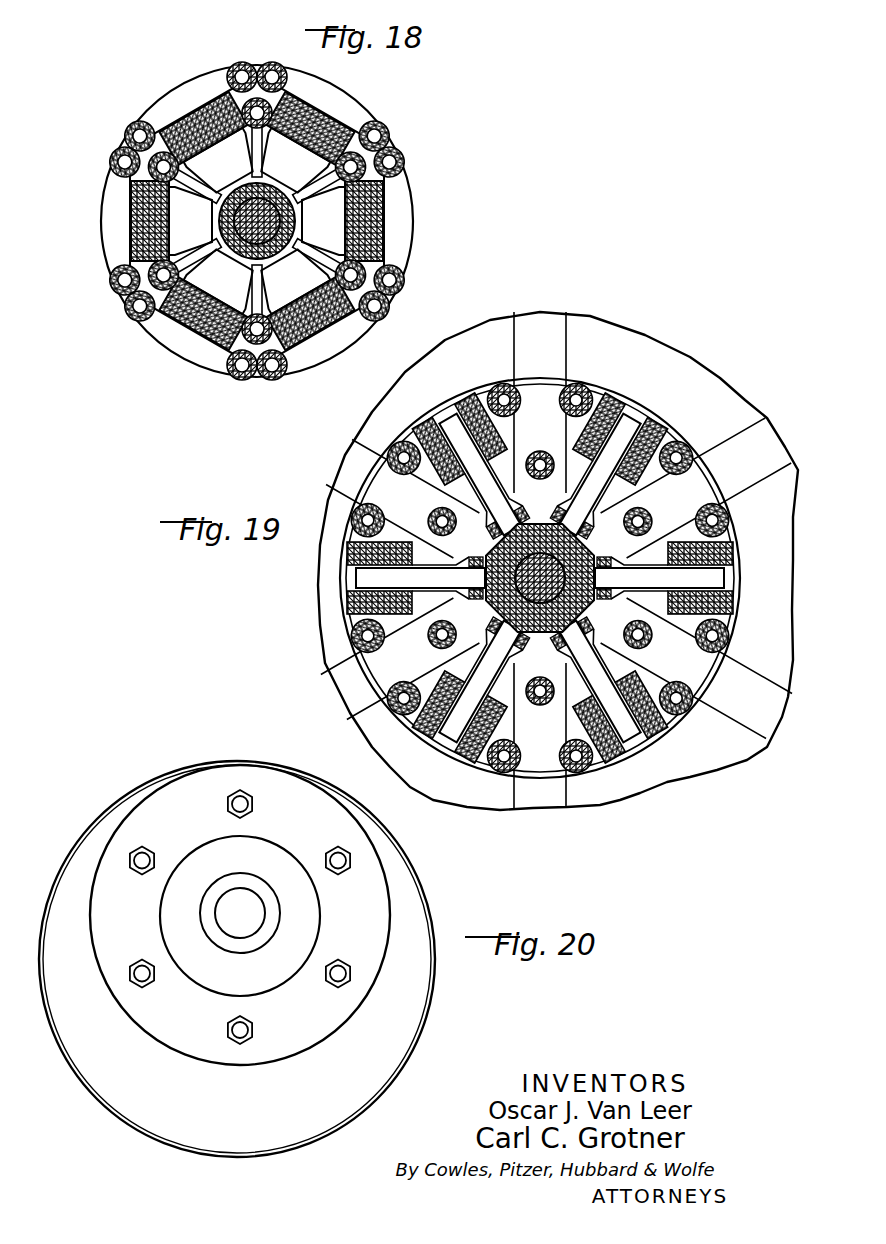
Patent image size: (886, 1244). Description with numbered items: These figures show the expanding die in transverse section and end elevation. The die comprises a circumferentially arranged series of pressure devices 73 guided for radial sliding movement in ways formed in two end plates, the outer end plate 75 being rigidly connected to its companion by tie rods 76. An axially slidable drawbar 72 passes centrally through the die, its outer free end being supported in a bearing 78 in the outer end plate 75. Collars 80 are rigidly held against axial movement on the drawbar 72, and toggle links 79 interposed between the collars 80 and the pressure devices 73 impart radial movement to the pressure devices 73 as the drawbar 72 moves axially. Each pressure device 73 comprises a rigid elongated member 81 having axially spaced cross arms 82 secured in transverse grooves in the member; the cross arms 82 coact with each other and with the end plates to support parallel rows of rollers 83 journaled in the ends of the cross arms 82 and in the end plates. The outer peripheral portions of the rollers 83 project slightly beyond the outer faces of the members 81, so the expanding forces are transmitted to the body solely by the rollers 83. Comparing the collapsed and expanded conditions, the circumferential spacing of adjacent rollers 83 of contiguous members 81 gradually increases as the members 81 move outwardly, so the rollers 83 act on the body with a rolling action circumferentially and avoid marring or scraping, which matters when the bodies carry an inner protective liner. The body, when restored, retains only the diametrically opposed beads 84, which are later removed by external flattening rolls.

In FIG. 18, the drawbar 72 is at (284, 224).
In FIG. 19, the drawbar 72 is at (592, 600).
In FIG. 20, the drawbar 72 is at (250, 902).
In FIG. 18, the pressure devices 73 is at (359, 102).
In FIG. 19, the pressure devices 73 is at (548, 378).
In FIG. 20, the outer end plate 75 is at (178, 1050).
In FIG. 18, the tie rods 76 is at (264, 129).
In FIG. 19, the tie rods 76 is at (542, 452).
In FIG. 20, the tie rods 76 is at (254, 804).
In FIG. 20, the bearing 78 is at (319, 930).
In FIG. 19, the toggle links 79 is at (456, 408).
In FIG. 19, the collars 80 is at (545, 521).
In FIG. 18, the rigid elongated members 81 is at (374, 202).
In FIG. 19, the rigid elongated members 81 is at (438, 424).
In FIG. 18, the cross arms 82 is at (192, 90).
In FIG. 19, the cross arms 82 is at (423, 436).
In FIG. 18, the rollers 83 is at (394, 160).
In FIG. 19, the rollers 83 is at (508, 386).
In FIG. 19, the housing 84 is at (338, 578).